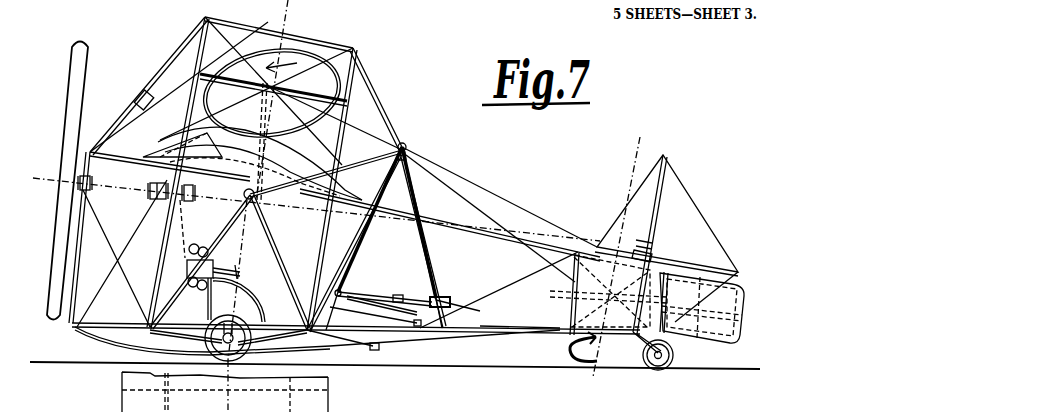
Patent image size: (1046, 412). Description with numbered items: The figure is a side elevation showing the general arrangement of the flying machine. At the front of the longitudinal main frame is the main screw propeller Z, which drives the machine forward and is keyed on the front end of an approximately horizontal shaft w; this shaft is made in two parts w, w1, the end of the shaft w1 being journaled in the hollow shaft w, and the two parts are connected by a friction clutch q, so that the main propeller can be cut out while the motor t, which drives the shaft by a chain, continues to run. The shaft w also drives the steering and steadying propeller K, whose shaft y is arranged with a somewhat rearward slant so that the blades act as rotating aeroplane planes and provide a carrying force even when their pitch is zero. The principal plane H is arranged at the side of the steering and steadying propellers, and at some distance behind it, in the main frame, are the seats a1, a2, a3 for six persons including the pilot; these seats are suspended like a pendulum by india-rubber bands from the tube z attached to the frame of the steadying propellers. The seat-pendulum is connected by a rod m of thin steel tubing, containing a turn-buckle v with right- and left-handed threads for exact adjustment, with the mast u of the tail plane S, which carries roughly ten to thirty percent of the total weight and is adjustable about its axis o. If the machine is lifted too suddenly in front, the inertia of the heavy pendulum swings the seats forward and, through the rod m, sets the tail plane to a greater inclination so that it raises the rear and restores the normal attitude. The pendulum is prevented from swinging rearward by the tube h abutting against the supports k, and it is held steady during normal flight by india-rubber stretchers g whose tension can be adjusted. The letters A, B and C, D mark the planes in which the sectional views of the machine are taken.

The section plane A— B is at (264, 26).
The steering and steadying propeller K is at (215, 52).
The main screw propeller Z is at (70, 105).
The propeller shaft y is at (272, 98).
The tube z is at (404, 144).
The principal plane H is at (295, 182).
The propeller shaft part w1 is at (116, 190).
The friction clutch q is at (160, 202).
The hollow shaft w is at (194, 200).
The motor t is at (212, 270).
The section plane A—B A is at (140, 345).
The seat a1 is at (347, 279).
The seat a2 is at (399, 290).
The seat a3 is at (463, 292).
The turn-buckle v is at (450, 308).
The india-rubber stretchers g is at (380, 330).
The tube h is at (430, 330).
The supports k is at (440, 330).
The rod m is at (520, 315).
The section plane C—D C is at (578, 356).
The section plane C— D is at (666, 210).
The tail plane axis o is at (645, 241).
The tail plane S is at (687, 247).
The mast u is at (608, 294).